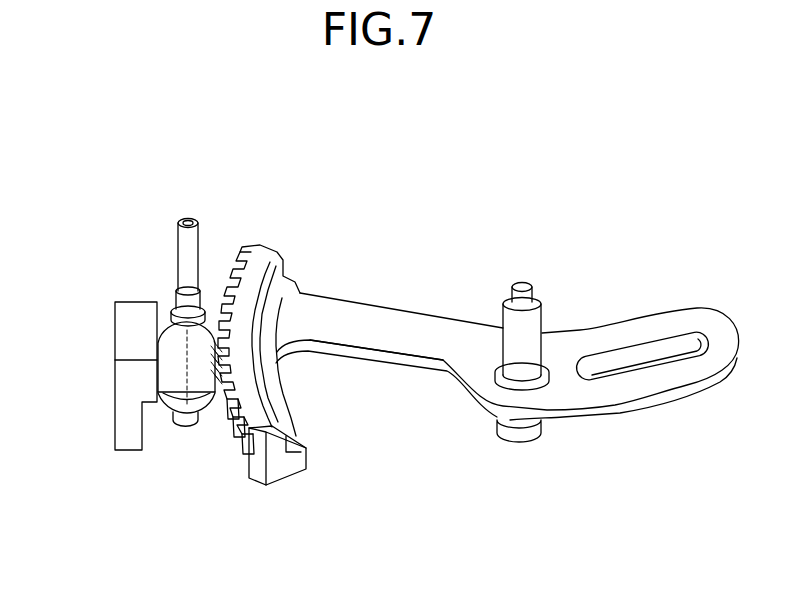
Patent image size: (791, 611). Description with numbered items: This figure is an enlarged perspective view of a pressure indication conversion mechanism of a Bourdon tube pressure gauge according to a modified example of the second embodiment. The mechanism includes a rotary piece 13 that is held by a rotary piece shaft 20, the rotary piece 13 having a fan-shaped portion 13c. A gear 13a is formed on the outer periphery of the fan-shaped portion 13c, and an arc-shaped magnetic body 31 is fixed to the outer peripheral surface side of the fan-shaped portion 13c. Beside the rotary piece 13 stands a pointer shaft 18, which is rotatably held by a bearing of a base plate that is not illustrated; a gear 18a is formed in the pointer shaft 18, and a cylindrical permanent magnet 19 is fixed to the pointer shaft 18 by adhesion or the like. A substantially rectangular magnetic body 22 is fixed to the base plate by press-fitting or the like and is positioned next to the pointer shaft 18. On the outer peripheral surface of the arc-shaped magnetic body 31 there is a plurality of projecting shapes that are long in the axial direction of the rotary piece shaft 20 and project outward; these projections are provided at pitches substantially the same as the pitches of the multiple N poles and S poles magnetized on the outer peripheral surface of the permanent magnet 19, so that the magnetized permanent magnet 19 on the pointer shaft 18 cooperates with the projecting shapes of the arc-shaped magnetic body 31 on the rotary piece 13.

The rotary piece 13 is at (577, 390).
The gear 13a is at (250, 477).
The fan-shaped portion 13c is at (283, 333).
The pointer shaft 18 is at (193, 238).
The gear 18a is at (190, 424).
The cylindrical permanent magnet 19 is at (168, 320).
The rotary piece shaft 20 is at (530, 348).
The magnetic body 22 is at (135, 330).
The arc-shaped magnetic body 31 is at (263, 257).